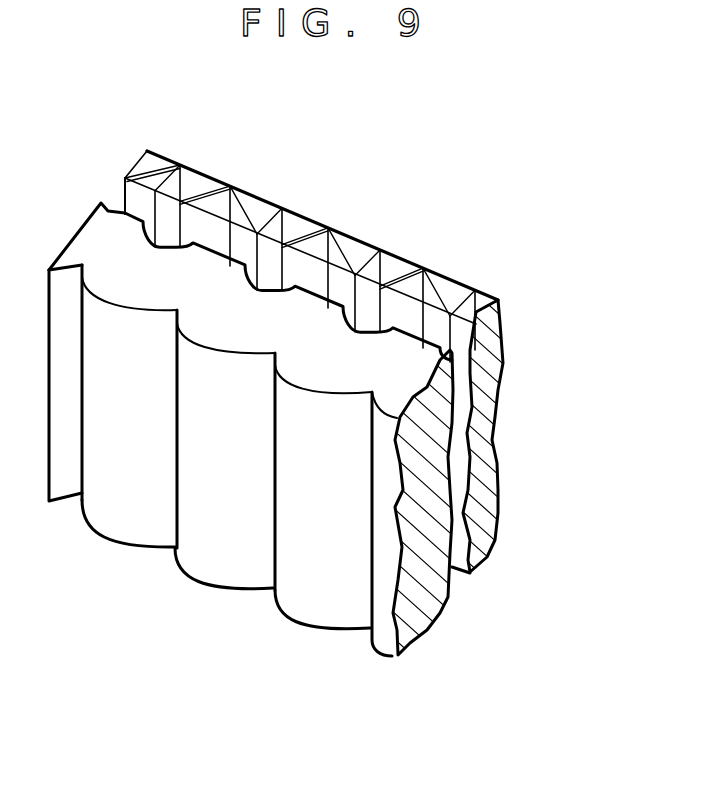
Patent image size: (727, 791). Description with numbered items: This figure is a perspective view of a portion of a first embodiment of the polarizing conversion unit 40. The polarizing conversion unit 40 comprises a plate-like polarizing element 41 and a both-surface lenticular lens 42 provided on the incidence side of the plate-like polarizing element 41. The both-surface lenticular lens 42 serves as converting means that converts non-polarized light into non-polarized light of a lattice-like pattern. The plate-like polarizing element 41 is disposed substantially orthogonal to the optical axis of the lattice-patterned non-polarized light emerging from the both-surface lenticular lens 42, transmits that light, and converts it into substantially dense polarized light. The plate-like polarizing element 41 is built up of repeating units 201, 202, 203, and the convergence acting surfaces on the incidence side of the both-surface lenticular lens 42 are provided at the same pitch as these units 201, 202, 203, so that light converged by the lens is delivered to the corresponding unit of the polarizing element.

The unit 201 is at (198, 174).
The unit 202 is at (320, 224).
The unit 203 is at (440, 271).
The polarizing conversion unit 40 is at (526, 355).
The plate-like polarizing element 41 is at (490, 449).
The both-surface lenticular lens 42 is at (425, 618).